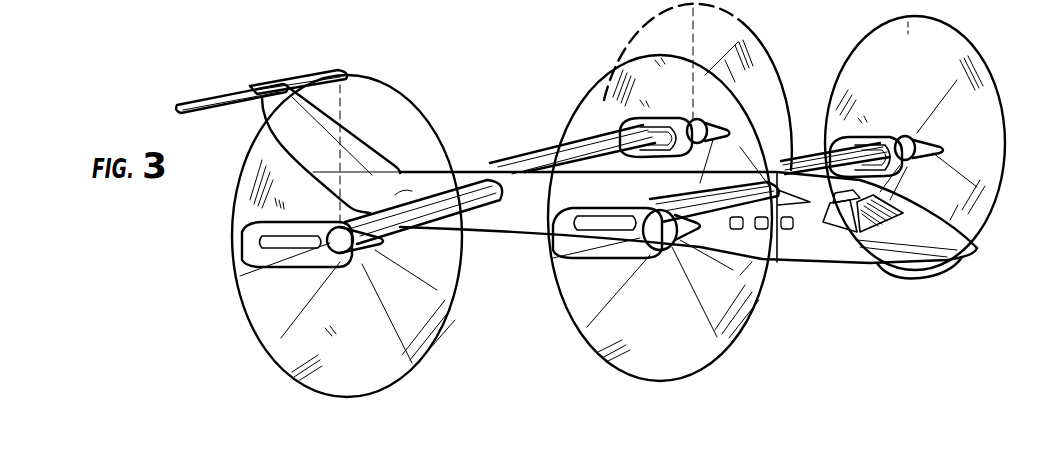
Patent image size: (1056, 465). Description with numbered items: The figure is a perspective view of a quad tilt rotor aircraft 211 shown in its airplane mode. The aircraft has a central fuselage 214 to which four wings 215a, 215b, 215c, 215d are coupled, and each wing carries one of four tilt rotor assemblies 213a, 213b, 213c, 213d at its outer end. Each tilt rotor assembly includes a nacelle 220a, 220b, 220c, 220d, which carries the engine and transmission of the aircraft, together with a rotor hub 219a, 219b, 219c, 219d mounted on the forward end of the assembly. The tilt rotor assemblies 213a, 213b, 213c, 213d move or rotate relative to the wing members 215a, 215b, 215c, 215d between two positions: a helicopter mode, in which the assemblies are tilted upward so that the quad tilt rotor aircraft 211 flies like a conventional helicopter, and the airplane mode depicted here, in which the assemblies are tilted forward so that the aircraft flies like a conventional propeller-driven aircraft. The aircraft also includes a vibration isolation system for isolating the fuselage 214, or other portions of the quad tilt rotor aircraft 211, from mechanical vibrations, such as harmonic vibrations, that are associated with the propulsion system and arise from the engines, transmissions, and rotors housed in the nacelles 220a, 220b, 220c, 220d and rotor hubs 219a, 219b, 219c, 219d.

The quad tilt rotor aircraft 211 is at (538, 48).
The tilt rotor assembly 213a is at (912, 113).
The tilt rotor assembly 213b is at (679, 108).
The tilt rotor assembly 213c is at (623, 268).
The tilt rotor assembly 213d is at (220, 270).
The fuselage 214 is at (841, 248).
The wing 215a is at (800, 163).
The wing 215b is at (543, 162).
The wing 215c is at (650, 198).
The wing 215d is at (470, 190).
The rotor hub 219a is at (933, 133).
The rotor hub 219b is at (713, 120).
The rotor hub 219c is at (667, 247).
The rotor hub 219d is at (363, 253).
The nacelle 220a is at (877, 140).
The nacelle 220b is at (622, 133).
The nacelle 220c is at (607, 237).
The nacelle 220d is at (290, 268).